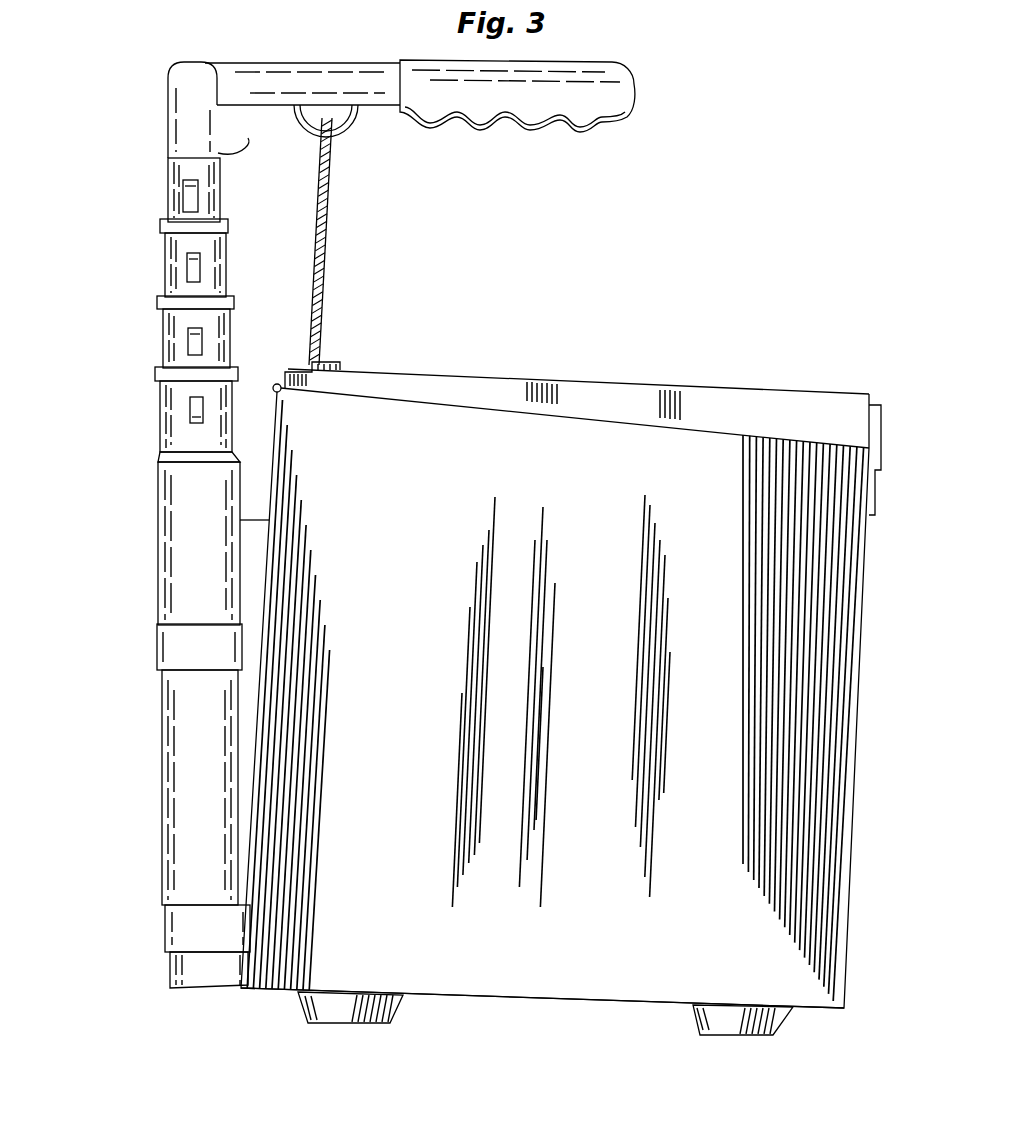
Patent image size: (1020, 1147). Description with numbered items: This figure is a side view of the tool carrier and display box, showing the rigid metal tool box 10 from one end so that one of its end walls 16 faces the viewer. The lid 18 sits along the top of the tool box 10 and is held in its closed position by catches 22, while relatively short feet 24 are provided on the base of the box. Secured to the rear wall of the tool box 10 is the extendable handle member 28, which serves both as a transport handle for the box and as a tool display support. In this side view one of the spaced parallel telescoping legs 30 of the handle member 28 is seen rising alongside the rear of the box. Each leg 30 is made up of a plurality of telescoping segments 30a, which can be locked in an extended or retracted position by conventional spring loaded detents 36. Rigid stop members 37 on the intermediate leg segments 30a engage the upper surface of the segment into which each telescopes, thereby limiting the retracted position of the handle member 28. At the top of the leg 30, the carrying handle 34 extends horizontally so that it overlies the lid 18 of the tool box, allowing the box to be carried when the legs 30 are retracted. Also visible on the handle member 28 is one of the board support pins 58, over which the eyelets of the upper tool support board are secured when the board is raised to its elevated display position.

The tool box 10 is at (910, 726).
The end walls 16 is at (568, 982).
The lid 18 is at (705, 396).
The catches 22 is at (283, 386).
The feet 24 is at (400, 1015).
The extendable handle member 28 is at (178, 548).
The telescoping legs 30 is at (172, 630).
The telescoping segments 30a is at (190, 135).
The carrying handle 34 is at (482, 100).
The spring loaded detents 36 is at (183, 196).
The stop members 37 is at (162, 226).
The board support pins 58 is at (242, 150).